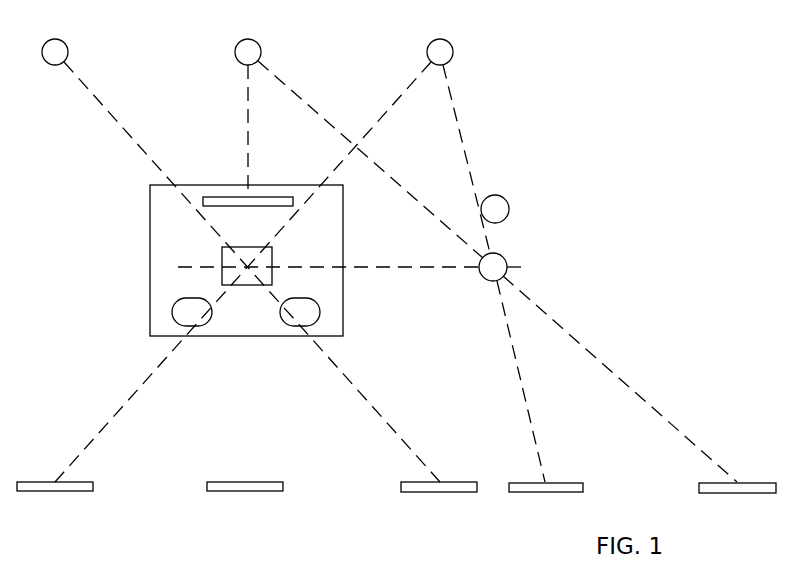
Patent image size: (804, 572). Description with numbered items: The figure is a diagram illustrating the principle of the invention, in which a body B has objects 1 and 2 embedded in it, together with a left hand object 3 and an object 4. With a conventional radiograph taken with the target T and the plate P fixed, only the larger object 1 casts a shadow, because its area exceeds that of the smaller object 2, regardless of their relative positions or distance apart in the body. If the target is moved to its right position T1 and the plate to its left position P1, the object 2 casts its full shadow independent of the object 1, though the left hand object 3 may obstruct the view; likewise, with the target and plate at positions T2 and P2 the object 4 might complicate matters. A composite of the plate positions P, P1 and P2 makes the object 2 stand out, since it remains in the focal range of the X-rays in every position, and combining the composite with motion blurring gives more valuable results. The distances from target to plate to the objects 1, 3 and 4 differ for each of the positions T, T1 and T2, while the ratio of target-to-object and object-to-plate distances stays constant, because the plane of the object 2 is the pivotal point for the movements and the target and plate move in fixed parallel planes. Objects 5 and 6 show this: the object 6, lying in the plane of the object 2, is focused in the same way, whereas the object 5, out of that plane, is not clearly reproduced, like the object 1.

The object 1 is at (248, 211).
The object 2 is at (247, 276).
The left hand object 3 is at (195, 316).
The object 4 is at (305, 316).
The object 5 is at (501, 209).
The object 6 is at (499, 266).
The body B is at (161, 250).
The target T is at (248, 38).
The right position of target T1 is at (432, 22).
The target position T2 is at (47, 22).
The plate P is at (245, 498).
The left position of plate P1 is at (55, 498).
The plate position P2 is at (439, 498).